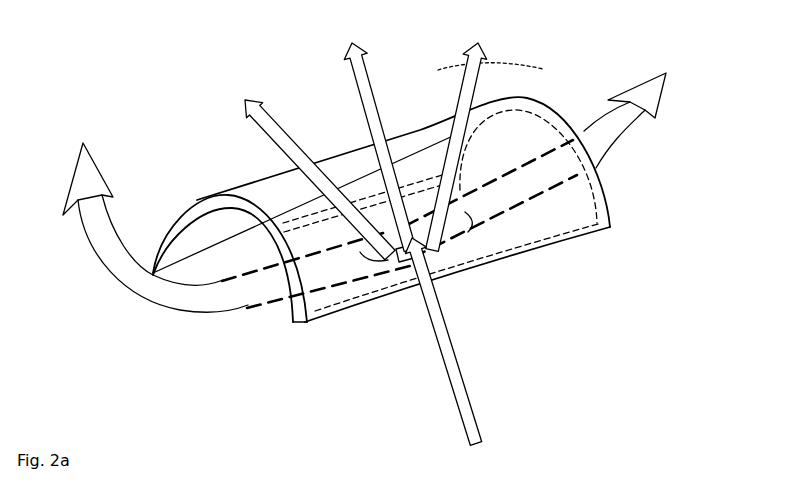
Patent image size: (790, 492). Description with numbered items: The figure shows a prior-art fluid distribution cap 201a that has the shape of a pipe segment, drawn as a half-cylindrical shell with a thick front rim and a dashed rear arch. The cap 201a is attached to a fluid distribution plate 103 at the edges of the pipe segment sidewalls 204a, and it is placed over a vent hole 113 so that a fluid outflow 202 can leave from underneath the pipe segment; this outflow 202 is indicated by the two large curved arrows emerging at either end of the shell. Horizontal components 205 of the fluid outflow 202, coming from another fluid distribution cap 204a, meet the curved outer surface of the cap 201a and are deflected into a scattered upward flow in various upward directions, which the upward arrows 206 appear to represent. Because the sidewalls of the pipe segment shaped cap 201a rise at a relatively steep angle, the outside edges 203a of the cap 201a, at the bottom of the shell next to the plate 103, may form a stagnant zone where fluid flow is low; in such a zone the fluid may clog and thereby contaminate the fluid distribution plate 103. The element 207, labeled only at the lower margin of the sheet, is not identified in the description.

The fluid distribution cap 201a is at (243, 177).
The fluid outflow 202 is at (113, 215).
The outside edges 203a is at (343, 320).
The fluid distribution plate 103 is at (246, 340).
The pipe segment sidewalls 204a is at (545, 212).
The vent hole 113 is at (402, 270).
The emitted light arrows 206 is at (357, 139).
The horizontal components 205 is at (449, 353).
The reference element 207 is at (161, 487).